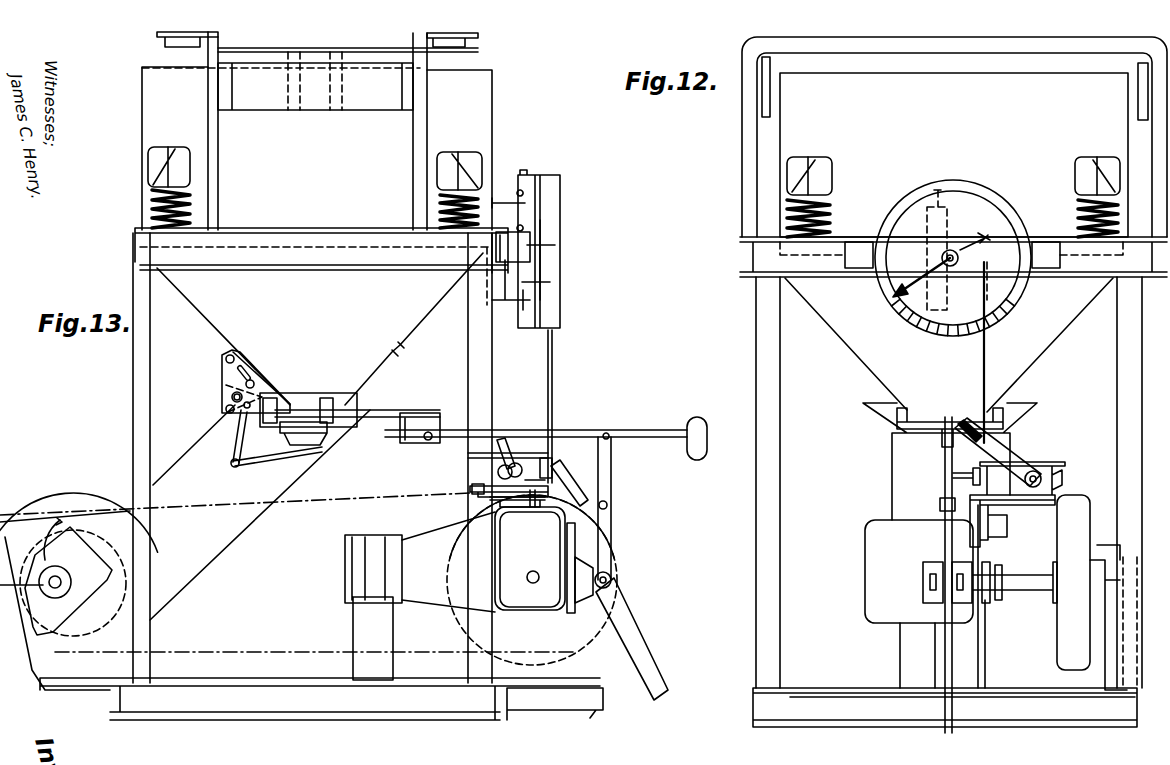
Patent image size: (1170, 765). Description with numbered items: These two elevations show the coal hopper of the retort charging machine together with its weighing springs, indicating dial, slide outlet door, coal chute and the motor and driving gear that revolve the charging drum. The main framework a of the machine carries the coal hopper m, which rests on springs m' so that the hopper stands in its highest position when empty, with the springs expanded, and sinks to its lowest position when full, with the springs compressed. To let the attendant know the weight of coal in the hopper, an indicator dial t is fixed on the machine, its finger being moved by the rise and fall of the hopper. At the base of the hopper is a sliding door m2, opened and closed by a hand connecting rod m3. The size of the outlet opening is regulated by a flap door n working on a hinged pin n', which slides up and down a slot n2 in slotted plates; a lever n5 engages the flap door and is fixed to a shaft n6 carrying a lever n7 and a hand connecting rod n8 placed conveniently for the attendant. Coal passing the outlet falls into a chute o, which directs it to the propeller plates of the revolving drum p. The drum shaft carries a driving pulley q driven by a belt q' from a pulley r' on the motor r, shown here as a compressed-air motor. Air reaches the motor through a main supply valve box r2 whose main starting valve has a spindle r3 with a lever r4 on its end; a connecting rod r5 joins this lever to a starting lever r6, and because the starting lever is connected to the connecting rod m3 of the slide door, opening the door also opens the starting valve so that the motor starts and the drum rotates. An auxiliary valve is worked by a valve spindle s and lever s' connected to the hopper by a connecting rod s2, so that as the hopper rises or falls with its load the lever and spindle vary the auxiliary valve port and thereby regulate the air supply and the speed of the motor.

In FIG. 13, the coal hopper m is at (317, 131).
In FIG. 12, the coal hopper m is at (954, 137).
In FIG. 13, the springs m' is at (315, 187).
In FIG. 12, the springs m' is at (953, 197).
In FIG. 13, the sliding door m2 is at (277, 433).
In FIG. 12, the sliding door m2 is at (898, 426).
In FIG. 13, the hand connecting rod m3 is at (631, 432).
In FIG. 13, the indicator dial t is at (562, 192).
In FIG. 12, the indicator dial t is at (975, 204).
In FIG. 13, the valve spindle s is at (559, 461).
In FIG. 12, the valve spindle s is at (1017, 504).
In FIG. 12, the lever s' is at (1001, 452).
In FIG. 13, the connecting rod s2 is at (553, 357).
In FIG. 12, the connecting rod s2 is at (987, 355).
In FIG. 13, the main framework a is at (312, 458).
In FIG. 12, the main framework a is at (949, 482).
In FIG. 13, the flap door n is at (256, 372).
In FIG. 13, the hinged pin n' is at (265, 378).
In FIG. 13, the slot n2 is at (248, 367).
In FIG. 13, the lever n5 is at (227, 387).
In FIG. 13, the shaft n6 is at (232, 400).
In FIG. 13, the lever n7 is at (233, 423).
In FIG. 13, the hand connecting rod n8 is at (257, 442).
In FIG. 13, the motor r is at (469, 580).
In FIG. 12, the motor r is at (1001, 592).
In FIG. 13, the pulley r' is at (532, 587).
In FIG. 12, the pulley r' is at (1097, 592).
In FIG. 13, the main supply valve box r2 is at (500, 475).
In FIG. 12, the main supply valve box r2 is at (988, 483).
In FIG. 13, the spindle of the main starting valve r3 is at (488, 496).
In FIG. 12, the spindle of the main starting valve r3 is at (953, 477).
In FIG. 13, the lever r4 is at (488, 458).
In FIG. 13, the connecting rod r5 is at (578, 482).
In FIG. 13, the starting lever r6 is at (612, 478).
In FIG. 12, the starting lever r6 is at (945, 713).
In FIG. 13, the chute o is at (316, 436).
In FIG. 12, the chute o is at (949, 399).
In FIG. 13, the drum p is at (79, 591).
In FIG. 13, the driving pulley q is at (85, 581).
In FIG. 13, the belt q' is at (169, 498).